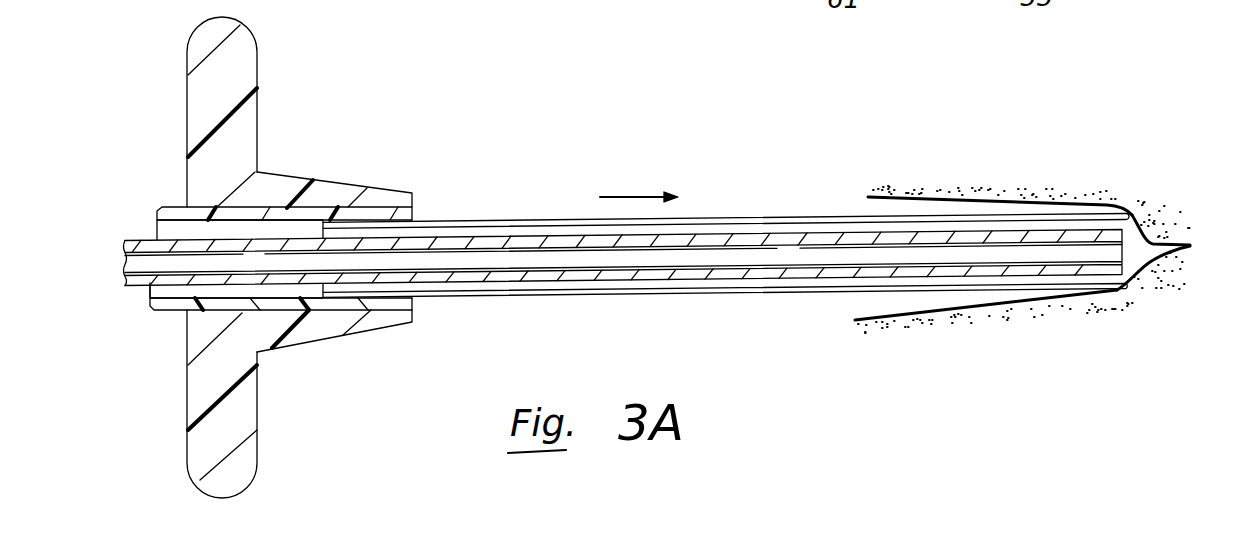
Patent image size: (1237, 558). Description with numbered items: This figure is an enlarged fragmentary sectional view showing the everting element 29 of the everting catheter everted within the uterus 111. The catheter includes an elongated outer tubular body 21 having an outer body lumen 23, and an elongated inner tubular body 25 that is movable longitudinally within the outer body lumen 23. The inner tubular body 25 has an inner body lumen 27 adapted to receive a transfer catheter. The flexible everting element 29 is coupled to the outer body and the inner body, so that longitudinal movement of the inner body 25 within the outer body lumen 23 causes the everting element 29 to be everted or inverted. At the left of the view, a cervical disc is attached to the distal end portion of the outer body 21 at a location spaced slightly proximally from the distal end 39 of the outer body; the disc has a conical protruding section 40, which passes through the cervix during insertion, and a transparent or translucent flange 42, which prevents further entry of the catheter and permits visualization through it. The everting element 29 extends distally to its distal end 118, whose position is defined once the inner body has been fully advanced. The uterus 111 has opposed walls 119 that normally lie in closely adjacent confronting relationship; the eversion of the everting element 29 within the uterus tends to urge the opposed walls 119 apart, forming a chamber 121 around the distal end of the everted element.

The outer tubular body 21 is at (624, 244).
The outer body lumen 23 is at (158, 233).
The inner tubular body 25 is at (260, 280).
The inner body lumen 27 is at (594, 257).
The everting element 29 is at (779, 294).
The distal end 39 is at (415, 206).
The conical protruding section 40 is at (327, 193).
The flange 42 is at (247, 452).
The uterus 111 is at (1010, 298).
The distal end 118 is at (1128, 207).
The opposed walls 119 is at (913, 203).
The chamber 121 is at (1137, 246).